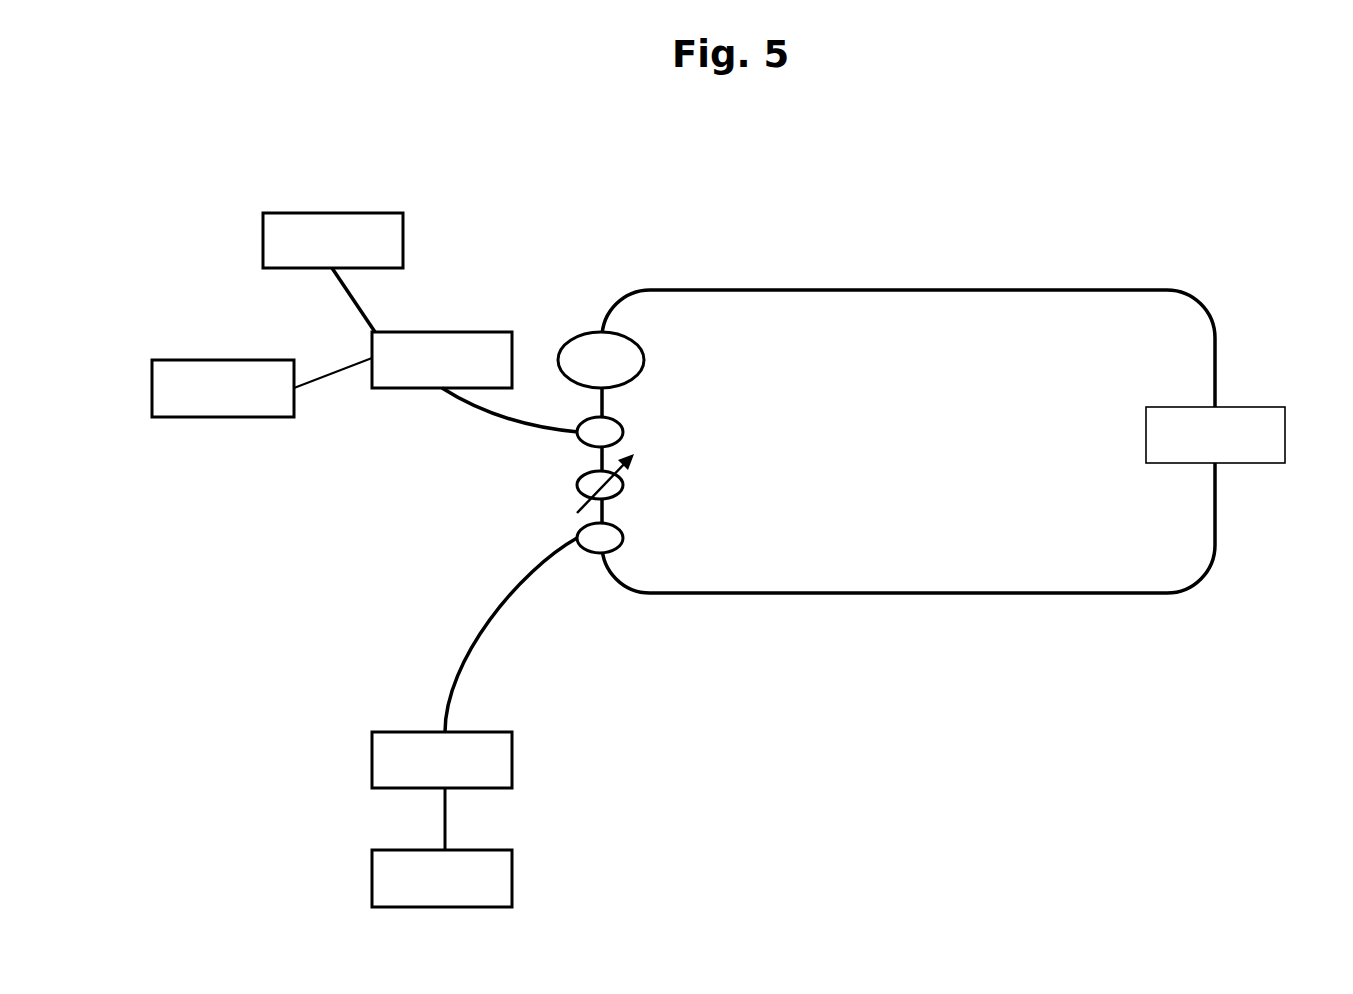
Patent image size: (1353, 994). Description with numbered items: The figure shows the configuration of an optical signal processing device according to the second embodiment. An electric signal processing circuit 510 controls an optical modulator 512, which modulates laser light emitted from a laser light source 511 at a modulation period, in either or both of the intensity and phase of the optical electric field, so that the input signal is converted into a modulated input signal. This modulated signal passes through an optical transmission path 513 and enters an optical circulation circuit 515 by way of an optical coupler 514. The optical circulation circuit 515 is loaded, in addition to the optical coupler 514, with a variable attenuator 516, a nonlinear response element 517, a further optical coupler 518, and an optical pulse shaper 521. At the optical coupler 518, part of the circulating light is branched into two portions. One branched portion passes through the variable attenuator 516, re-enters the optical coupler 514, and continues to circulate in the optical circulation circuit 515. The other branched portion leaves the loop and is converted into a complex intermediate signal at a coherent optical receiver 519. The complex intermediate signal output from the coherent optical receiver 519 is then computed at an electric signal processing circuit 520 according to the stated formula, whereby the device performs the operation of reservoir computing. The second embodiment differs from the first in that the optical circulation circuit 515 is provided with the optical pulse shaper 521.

The electric signal processing circuit 510 is at (212, 360).
The laser light source 511 is at (325, 212).
The optical modulator 512 is at (453, 332).
The optical transmission path 513 is at (503, 417).
The optical coupler 514 is at (623, 433).
The optical circulation circuit 515 is at (945, 290).
The variable attenuator 516 is at (625, 477).
The nonlinear response element 517 is at (645, 353).
The optical coupler 518 is at (623, 533).
The coherent optical receiver 519 is at (512, 758).
The electric signal processing circuit 520 is at (512, 882).
The optical pulse shaper 521 is at (1146, 440).